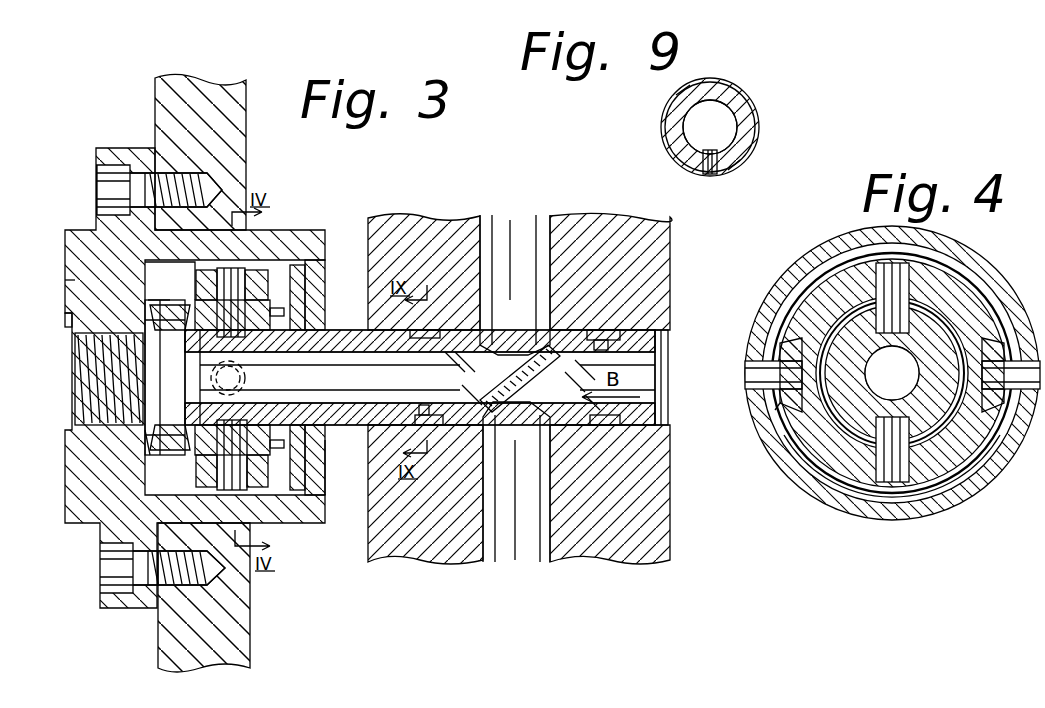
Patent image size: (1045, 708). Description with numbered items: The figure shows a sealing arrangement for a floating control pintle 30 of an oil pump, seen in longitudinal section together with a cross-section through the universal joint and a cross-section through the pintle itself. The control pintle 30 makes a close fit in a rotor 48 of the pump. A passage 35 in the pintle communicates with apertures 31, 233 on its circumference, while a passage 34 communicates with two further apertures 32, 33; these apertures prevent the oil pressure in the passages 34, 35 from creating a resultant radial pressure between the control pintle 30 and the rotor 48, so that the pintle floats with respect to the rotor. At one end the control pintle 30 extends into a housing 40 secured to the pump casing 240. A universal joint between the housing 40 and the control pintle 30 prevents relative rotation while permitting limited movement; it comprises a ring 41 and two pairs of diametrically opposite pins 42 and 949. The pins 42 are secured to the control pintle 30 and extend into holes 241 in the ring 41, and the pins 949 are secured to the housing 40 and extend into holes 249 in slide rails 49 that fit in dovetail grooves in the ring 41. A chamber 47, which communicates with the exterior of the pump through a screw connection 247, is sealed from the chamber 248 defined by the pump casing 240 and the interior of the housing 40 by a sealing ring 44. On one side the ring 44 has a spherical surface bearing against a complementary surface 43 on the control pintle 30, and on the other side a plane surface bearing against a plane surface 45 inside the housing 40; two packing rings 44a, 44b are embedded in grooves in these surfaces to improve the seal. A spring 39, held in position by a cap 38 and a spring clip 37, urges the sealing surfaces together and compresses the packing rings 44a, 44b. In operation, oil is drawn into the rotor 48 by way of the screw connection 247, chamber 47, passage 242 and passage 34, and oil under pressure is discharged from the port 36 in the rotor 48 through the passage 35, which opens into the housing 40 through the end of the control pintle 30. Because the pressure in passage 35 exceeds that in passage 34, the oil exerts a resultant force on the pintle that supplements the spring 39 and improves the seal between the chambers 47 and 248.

In FIG. 3, the pump casing 240 is at (185, 618).
In FIG. 3, the housing 40 is at (300, 493).
In FIG. 4, the housing 40 is at (998, 458).
In FIG. 3, the screw connection 247 is at (88, 362).
In FIG. 3, the chamber 47 is at (150, 405).
In FIG. 3, the ring 41 is at (212, 478).
In FIG. 4, the ring 41 is at (962, 305).
In FIG. 3, the pins 42 is at (232, 480).
In FIG. 4, the pins 42 is at (902, 285).
In FIG. 3, the packing ring 44a is at (137, 272).
In FIG. 3, the packing ring 44b is at (80, 292).
In FIG. 3, the complementary surface 43 is at (160, 298).
In FIG. 3, the plane surface 45 is at (68, 300).
In FIG. 3, the sealing ring 44 is at (148, 455).
In FIG. 3, the cap 38 is at (298, 300).
In FIG. 3, the spring clip 37 is at (315, 282).
In FIG. 3, the spring 39 is at (277, 305).
In FIG. 3, the control pintle 30 is at (470, 340).
In FIG. 9, the control pintle 30 is at (670, 122).
In FIG. 3, the passage 242 is at (348, 365).
In FIG. 9, the passage 242 is at (722, 125).
In FIG. 3, the pins 949 is at (233, 380).
In FIG. 4, the pins 949 is at (1005, 375).
In FIG. 3, the port 36 is at (662, 350).
In FIG. 3, the chamber 248 is at (330, 470).
In FIG. 3, the passage 34 is at (525, 330).
In FIG. 3, the passage 35 is at (512, 420).
In FIG. 3, the aperture 31 is at (436, 330).
In FIG. 9, the aperture 31 is at (738, 104).
In FIG. 3, the rotor 48 is at (650, 275).
In FIG. 3, the aperture 233 is at (601, 330).
In FIG. 3, the aperture 32 is at (432, 430).
In FIG. 9, the aperture 32 is at (710, 176).
In FIG. 3, the aperture 33 is at (602, 428).
In FIG. 4, the slide rails 49 is at (782, 395).
In FIG. 4, the holes 249 is at (778, 412).
In FIG. 4, the holes 241 is at (918, 492).